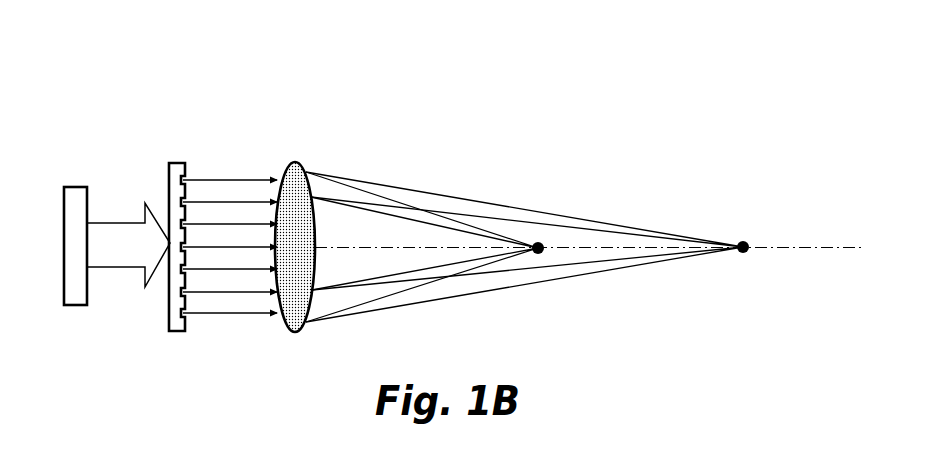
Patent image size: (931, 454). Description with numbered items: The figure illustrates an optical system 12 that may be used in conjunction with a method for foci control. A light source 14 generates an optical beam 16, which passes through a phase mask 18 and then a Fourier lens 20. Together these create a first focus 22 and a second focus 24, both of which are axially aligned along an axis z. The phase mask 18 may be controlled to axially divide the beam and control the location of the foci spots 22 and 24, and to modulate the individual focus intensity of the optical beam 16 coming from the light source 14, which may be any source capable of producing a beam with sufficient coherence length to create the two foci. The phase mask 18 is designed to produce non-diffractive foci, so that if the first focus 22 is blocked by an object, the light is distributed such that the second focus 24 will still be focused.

The optical system 12 is at (592, 102).
The light source 14 is at (72, 187).
The optical beam 16 is at (130, 267).
The phase mask 18 is at (175, 163).
The Fourier lens 20 is at (293, 162).
The first focus 22 is at (532, 240).
The second focus 24 is at (743, 241).
The axis z is at (817, 250).